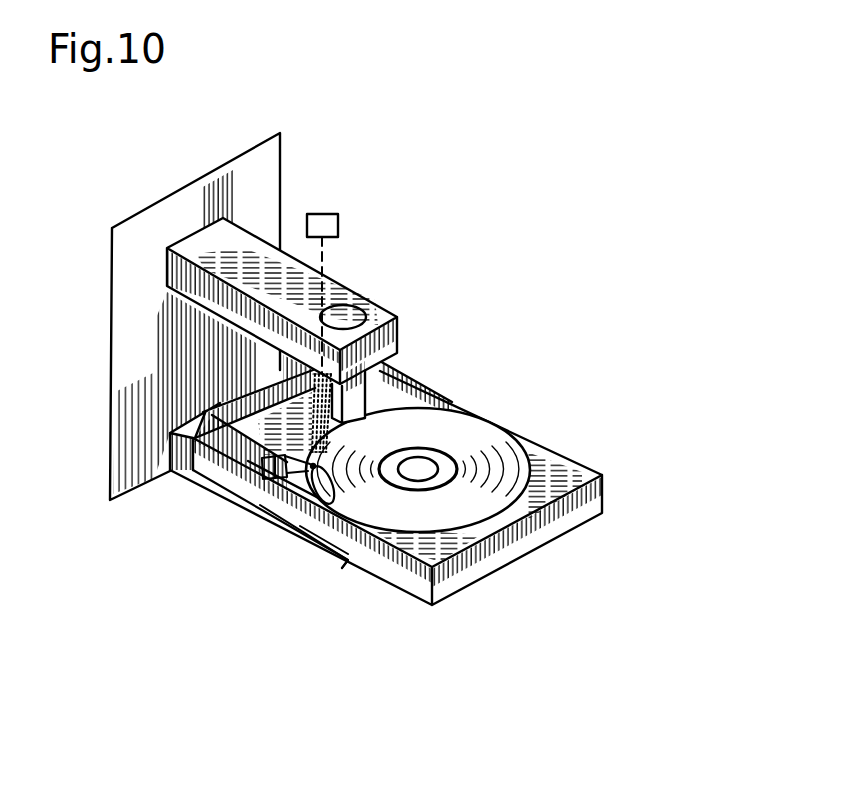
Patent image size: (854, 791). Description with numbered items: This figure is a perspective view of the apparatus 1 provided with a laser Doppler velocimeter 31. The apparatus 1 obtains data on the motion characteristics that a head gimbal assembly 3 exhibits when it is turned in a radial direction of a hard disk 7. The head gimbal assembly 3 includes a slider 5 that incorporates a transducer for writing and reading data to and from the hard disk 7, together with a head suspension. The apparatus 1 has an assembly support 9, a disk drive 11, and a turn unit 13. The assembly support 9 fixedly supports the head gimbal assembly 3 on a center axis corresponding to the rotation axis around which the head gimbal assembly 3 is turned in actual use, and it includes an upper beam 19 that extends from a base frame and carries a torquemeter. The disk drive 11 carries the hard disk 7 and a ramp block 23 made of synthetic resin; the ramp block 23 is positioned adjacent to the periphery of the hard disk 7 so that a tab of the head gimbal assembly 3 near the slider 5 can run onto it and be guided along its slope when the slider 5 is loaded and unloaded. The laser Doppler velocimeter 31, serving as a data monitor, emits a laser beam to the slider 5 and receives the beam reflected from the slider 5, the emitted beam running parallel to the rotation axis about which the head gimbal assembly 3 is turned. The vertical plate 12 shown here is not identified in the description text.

The apparatus 1 is at (466, 217).
The head gimbal assembly 3 is at (349, 437).
The slider 5 is at (304, 470).
The hard disk 7 is at (510, 458).
The assembly support 9 is at (378, 302).
The disk drive 11 is at (615, 479).
The vertical plate 12 is at (263, 188).
The turn unit 13 is at (330, 559).
The upper beam 19 is at (281, 266).
The ramp block 23 is at (284, 482).
The laser Doppler velocimeter 31 is at (327, 216).